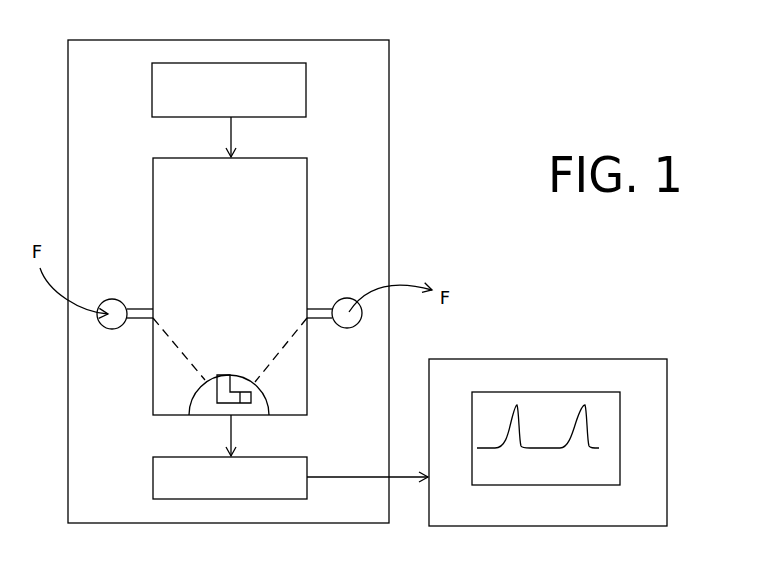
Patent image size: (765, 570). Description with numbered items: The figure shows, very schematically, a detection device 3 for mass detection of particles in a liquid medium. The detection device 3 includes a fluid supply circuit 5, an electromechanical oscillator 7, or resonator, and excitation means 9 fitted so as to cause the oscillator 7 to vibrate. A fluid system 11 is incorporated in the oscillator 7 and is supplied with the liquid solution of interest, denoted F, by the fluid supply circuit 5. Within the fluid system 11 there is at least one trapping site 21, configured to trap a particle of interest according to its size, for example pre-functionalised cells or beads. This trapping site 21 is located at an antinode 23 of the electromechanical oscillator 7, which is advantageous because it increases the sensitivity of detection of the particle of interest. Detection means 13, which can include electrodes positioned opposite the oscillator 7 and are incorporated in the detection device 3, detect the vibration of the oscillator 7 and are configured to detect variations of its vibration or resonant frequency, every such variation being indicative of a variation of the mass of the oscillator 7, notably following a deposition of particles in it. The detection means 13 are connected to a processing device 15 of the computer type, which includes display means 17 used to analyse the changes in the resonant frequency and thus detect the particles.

The detection device 3 is at (403, 60).
The excitation means 9 is at (165, 96).
The electromechanical oscillator 7 is at (167, 386).
The fluid supply circuit 5 is at (107, 299).
The fluid system 11 is at (217, 354).
The antinode 23 is at (266, 393).
The trapping site 21 is at (222, 405).
The detection means 13 is at (167, 478).
The processing device 15 is at (630, 372).
The display means 17 is at (505, 399).